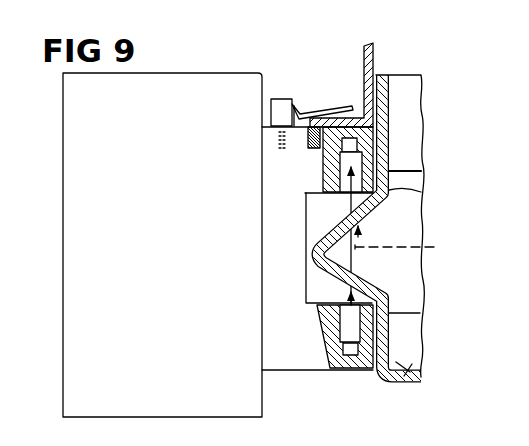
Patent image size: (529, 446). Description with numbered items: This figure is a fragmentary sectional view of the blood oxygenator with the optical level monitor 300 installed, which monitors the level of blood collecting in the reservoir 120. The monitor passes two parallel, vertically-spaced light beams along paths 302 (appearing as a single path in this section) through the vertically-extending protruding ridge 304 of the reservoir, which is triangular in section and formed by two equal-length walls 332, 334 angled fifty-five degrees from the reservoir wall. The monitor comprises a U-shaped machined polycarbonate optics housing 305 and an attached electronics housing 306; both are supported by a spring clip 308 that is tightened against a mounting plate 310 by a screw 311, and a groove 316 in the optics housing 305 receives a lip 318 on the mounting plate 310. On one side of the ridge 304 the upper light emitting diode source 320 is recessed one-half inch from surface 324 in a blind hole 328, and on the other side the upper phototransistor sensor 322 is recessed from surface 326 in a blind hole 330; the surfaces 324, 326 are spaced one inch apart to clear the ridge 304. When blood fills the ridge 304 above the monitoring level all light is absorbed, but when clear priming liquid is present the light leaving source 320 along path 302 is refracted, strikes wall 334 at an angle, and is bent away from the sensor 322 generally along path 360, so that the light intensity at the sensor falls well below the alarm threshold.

The optical level monitor 300 is at (220, 71).
The light beam paths 302 is at (330, 303).
The protruding ridge 304 is at (318, 244).
The optics housing 305 is at (297, 373).
The electronics housing 306 is at (185, 349).
The spring clip 308 is at (303, 107).
The mounting plate 310 is at (373, 63).
The screw 311 is at (282, 101).
The groove 316 is at (306, 163).
The lip 318 is at (310, 127).
The light emitting diode source 320 is at (357, 350).
The phototransistor sensor 322 is at (357, 142).
The surface 324 is at (306, 198).
The surface 326 is at (307, 293).
The blind hole 328 is at (345, 182).
The blind hole 330 is at (343, 320).
The ridge wall 332 is at (370, 284).
The ridge wall 334 is at (373, 207).
The refracted light path 360 is at (411, 248).
The reservoir 120 is at (401, 359).